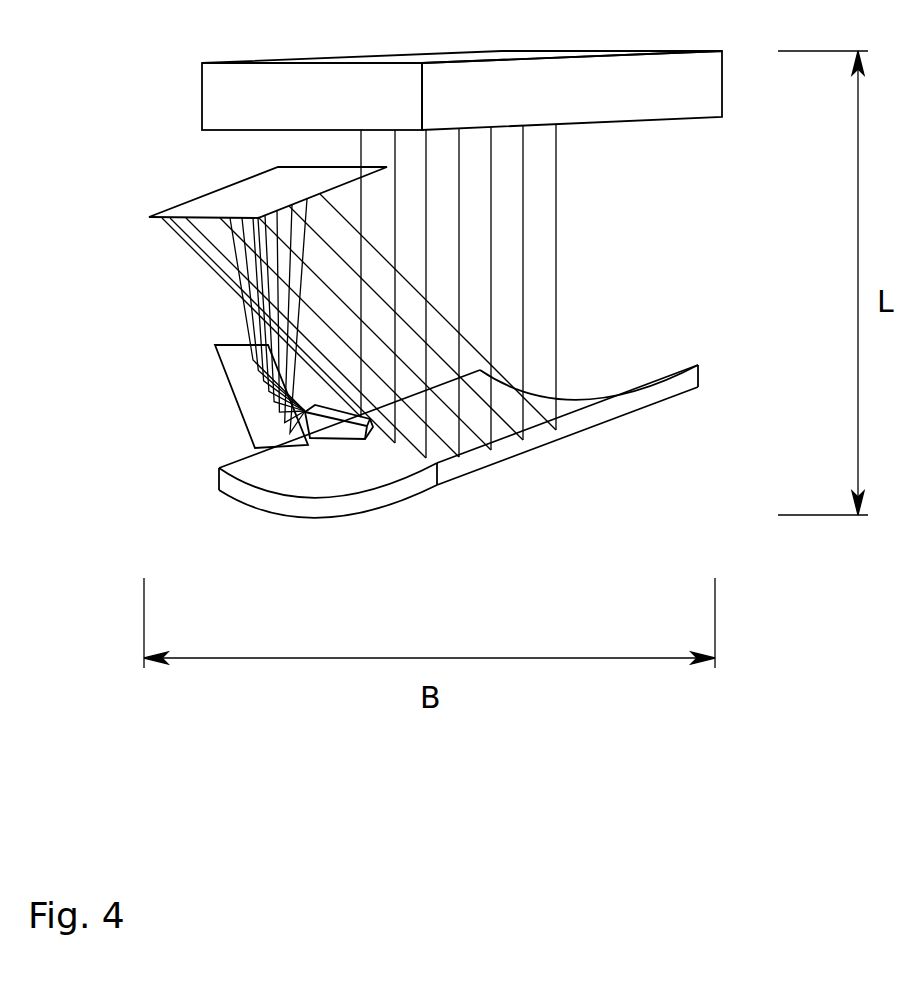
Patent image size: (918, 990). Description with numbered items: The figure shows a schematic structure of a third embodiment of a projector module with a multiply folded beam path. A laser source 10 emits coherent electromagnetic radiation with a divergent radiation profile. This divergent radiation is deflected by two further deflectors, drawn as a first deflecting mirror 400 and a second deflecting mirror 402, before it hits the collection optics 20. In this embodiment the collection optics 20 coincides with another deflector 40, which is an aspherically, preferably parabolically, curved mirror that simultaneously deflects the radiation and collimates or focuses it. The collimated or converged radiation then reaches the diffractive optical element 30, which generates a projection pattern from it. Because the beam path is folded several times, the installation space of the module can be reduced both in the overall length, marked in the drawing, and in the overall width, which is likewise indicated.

The diffractive optical element 30 is at (615, 82).
The second deflecting mirror 402 is at (264, 186).
The first deflecting mirror 400 is at (230, 353).
The laser source 10 is at (333, 425).
The collection optics 20 is at (487, 441).
The deflector 40 is at (543, 445).